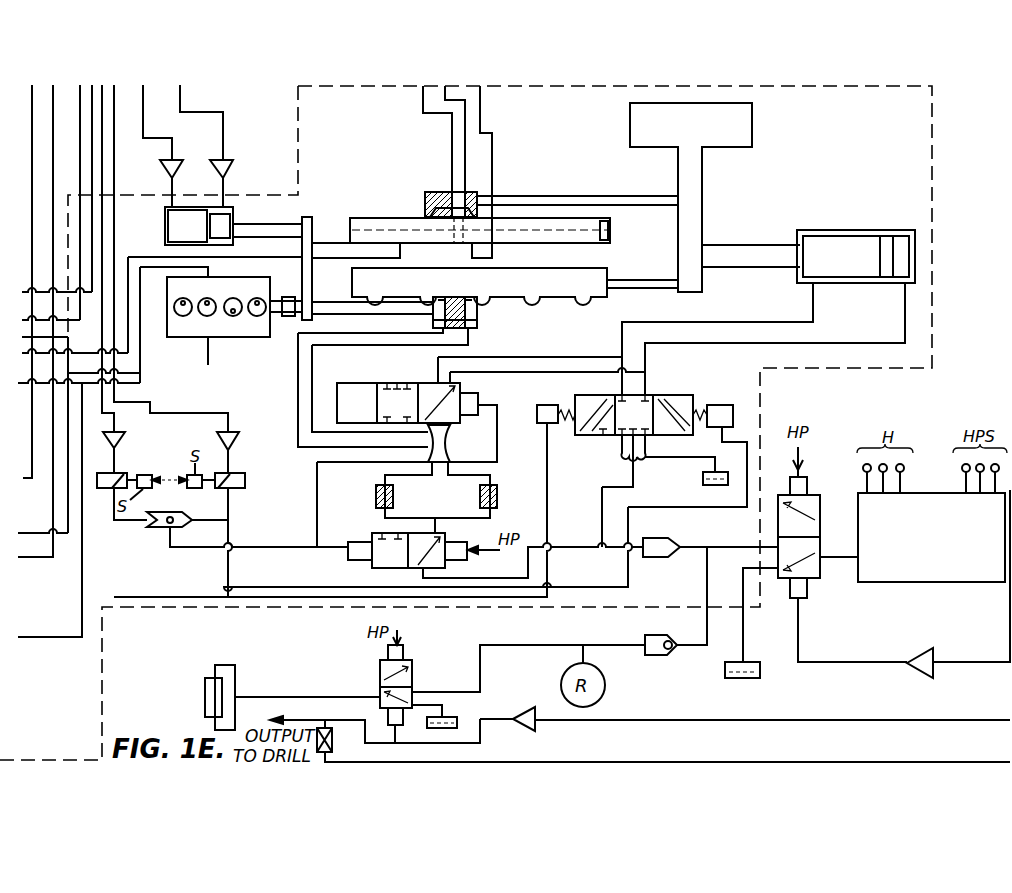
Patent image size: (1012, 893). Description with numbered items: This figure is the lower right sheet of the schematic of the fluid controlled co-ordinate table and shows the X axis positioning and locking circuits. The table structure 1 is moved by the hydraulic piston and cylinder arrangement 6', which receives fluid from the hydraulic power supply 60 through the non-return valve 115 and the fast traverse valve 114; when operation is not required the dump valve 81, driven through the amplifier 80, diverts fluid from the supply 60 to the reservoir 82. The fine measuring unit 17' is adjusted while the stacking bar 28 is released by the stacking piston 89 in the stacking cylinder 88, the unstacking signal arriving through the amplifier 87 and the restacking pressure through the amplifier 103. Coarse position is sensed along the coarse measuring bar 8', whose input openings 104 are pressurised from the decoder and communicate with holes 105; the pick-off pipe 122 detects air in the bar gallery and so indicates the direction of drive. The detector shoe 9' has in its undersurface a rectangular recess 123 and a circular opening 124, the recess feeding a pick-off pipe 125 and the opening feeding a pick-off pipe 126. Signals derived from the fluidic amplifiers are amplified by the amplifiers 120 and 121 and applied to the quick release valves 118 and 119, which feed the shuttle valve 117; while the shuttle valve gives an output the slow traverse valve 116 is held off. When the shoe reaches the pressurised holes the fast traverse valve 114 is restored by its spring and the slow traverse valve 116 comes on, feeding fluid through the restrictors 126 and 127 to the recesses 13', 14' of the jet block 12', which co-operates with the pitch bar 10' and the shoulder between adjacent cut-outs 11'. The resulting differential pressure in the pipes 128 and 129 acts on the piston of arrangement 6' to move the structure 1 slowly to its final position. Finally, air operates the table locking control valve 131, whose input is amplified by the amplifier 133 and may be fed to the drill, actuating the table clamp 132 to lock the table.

The table structure 1 is at (740, 127).
The hydraulic piston and cylinder arrangement 6' is at (808, 242).
The coarse measuring bar 8' is at (495, 241).
The detector shoe 9' is at (427, 193).
The pitch bar 10' is at (461, 286).
The cut-outs 11' is at (480, 289).
The jet block 12' is at (487, 339).
The recess 13' is at (478, 320).
The recess 14' is at (481, 312).
The fine measuring unit 17' is at (218, 320).
The stacking bar 28 is at (290, 297).
The hydraulic power supply 60 is at (946, 541).
The amplifier 80 is at (920, 676).
The dump valve 81 is at (820, 525).
The reservoir 82 is at (739, 679).
The amplifier 87 is at (178, 161).
The stacking cylinder 88 is at (165, 224).
The stacking piston 89 is at (226, 217).
The amplifier 103 is at (229, 161).
The input openings 104 is at (403, 235).
The holes 105 is at (402, 218).
The fast traverse valve 114 is at (678, 395).
The non-return valve 115 is at (648, 547).
The slow traverse valve 116 is at (388, 560).
The shuttle valve 117 is at (147, 527).
The quick release valve 118 is at (119, 474).
The quick release valve 119 is at (236, 474).
The amplifier 120 is at (118, 438).
The amplifier 121 is at (233, 433).
The pick-off pipe 122 is at (470, 244).
The rectangular recess 123 is at (462, 190).
The circular opening 124 is at (447, 192).
The pick-off pipe 125 is at (465, 135).
The pick-off pipe / restrictor 126 is at (423, 103).
The restrictor 127 is at (498, 492).
The pipe 128 is at (441, 436).
The pipe 129 is at (452, 428).
The table locking control valve 131 is at (380, 689).
The table clamp 132 is at (205, 696).
The amplifier 133 is at (519, 713).